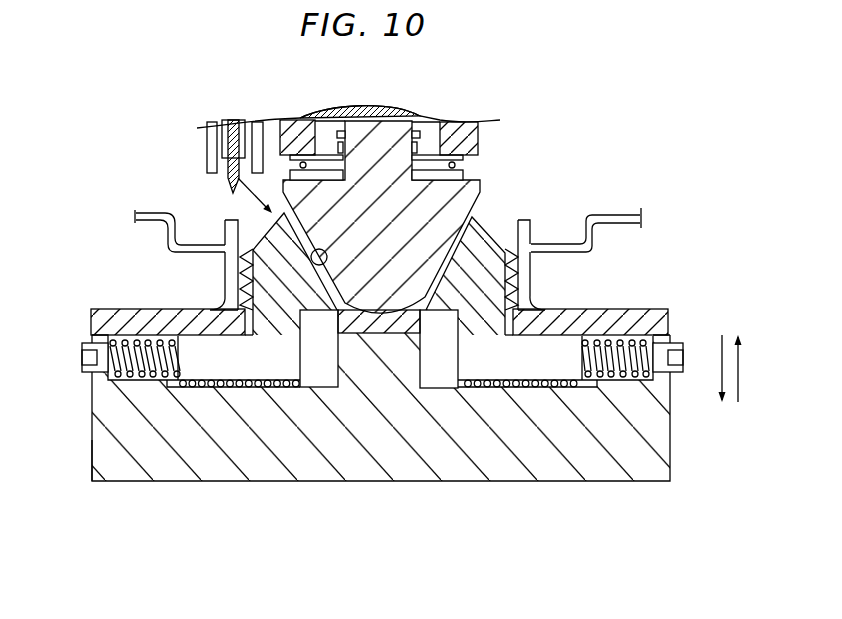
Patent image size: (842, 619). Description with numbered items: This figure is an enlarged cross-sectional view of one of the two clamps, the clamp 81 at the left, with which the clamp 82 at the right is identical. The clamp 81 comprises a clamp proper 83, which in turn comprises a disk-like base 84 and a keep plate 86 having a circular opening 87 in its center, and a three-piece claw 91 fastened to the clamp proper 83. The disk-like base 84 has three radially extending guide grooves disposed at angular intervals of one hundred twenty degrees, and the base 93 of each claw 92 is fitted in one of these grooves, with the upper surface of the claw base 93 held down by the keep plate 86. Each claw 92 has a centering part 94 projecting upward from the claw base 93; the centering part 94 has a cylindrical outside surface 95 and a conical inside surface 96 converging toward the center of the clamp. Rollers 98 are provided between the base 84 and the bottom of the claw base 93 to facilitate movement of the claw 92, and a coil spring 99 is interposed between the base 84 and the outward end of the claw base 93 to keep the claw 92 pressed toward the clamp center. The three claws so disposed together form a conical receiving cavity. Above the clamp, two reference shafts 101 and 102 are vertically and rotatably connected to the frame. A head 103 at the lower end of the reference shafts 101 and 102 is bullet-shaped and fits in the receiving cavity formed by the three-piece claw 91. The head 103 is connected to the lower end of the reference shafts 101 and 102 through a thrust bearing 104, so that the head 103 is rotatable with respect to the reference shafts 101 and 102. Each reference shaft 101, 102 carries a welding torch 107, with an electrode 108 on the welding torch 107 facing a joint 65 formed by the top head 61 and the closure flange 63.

The claw 92 is at (234, 168).
The electrode 108 is at (232, 121).
The welding torch 107 is at (262, 127).
The reference shaft 101 is at (412, 113).
The reference shaft 102 is at (473, 133).
The thrust bearing 104 is at (464, 176).
The head 103 is at (470, 186).
The three-piece claw 91 is at (499, 219).
The top head 61 is at (159, 214).
The joint 65 is at (228, 220).
The cylindrical outside surface 95 is at (234, 252).
The closure flange 63 is at (233, 274).
The conical inside surface 96 is at (320, 265).
The coil spring 99 is at (138, 345).
The circular opening 87 is at (545, 318).
The keep plate 86 is at (625, 320).
The centering part 94 is at (292, 304).
The rollers 98 is at (458, 391).
The disk-like base 84 is at (107, 400).
The clamp proper 83 is at (86, 456).
The clamp 81 is at (381, 431).
The clamp 82 is at (531, 485).
The claw base 93 is at (583, 390).